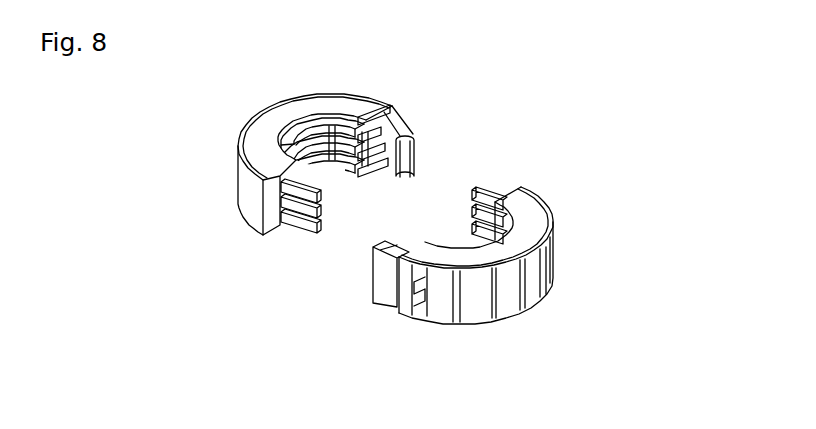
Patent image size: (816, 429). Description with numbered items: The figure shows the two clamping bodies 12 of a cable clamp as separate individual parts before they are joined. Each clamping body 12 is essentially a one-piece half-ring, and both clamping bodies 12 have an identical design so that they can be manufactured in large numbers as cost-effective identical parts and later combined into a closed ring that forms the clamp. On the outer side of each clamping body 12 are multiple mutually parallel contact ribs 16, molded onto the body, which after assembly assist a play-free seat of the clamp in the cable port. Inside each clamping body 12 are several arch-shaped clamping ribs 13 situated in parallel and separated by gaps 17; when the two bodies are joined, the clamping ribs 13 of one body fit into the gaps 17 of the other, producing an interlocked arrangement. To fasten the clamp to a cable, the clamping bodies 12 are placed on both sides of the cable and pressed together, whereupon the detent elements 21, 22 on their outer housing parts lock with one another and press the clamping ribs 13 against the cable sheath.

The clamping body 12 is at (214, 156).
The clamping ribs 13 is at (302, 157).
The contact ribs 16 is at (527, 292).
The gaps 17 is at (318, 147).
The detent element 21 is at (383, 284).
The detent element 22 is at (253, 193).